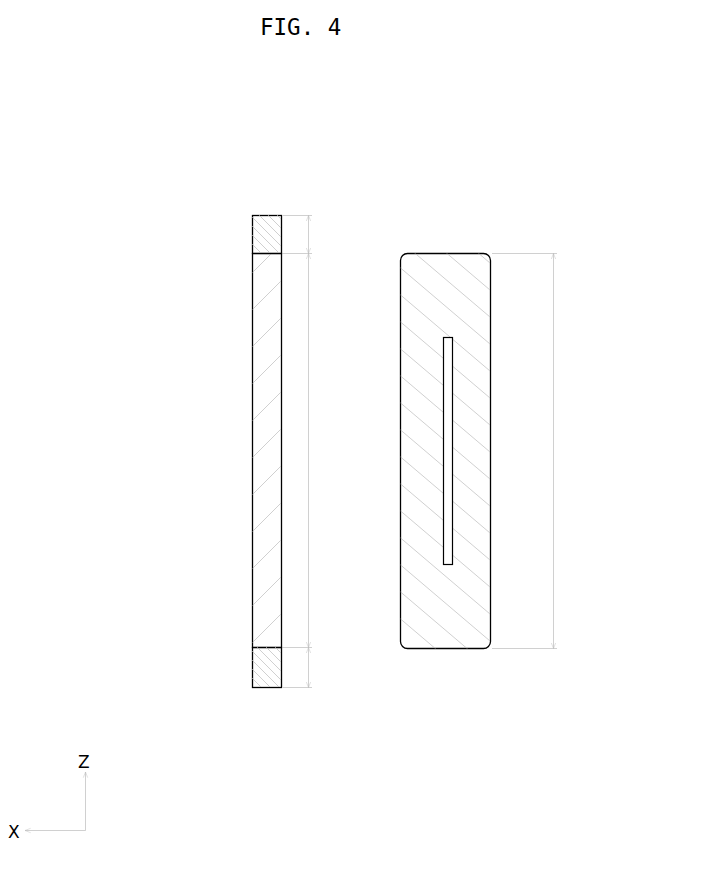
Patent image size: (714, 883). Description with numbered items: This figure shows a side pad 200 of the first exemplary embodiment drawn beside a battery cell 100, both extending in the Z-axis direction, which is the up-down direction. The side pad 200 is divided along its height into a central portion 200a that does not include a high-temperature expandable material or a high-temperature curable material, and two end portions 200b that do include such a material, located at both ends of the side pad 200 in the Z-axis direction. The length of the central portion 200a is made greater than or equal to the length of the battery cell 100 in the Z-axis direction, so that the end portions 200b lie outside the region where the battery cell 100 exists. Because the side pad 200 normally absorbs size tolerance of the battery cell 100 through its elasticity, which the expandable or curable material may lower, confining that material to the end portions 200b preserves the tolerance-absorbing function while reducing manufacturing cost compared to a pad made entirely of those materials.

The battery cell 100 is at (463, 245).
The side pad 200 is at (113, 158).
The portion that does not include a high-temperature expandable material or a high-t 200a is at (252, 447).
The portion including a high-temperature expandable material or a high-temperature c 200b is at (252, 232).